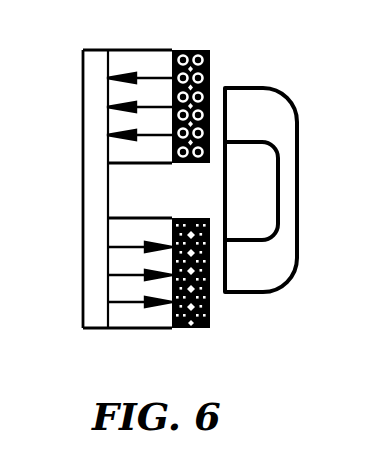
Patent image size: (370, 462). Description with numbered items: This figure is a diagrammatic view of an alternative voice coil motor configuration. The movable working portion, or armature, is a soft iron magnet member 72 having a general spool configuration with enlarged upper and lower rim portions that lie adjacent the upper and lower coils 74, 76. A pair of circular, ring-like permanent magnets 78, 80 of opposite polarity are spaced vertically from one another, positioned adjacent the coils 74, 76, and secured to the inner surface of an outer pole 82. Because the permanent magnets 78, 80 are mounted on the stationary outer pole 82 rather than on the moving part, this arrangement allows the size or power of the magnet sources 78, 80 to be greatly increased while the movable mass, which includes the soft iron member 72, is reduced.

The soft iron magnet member 72 is at (290, 122).
The upper coil 74 is at (213, 80).
The lower coil 76 is at (212, 312).
The upper permanent magnet 78 is at (141, 50).
The lower permanent magnet 80 is at (153, 320).
The outer pole 82 is at (100, 200).